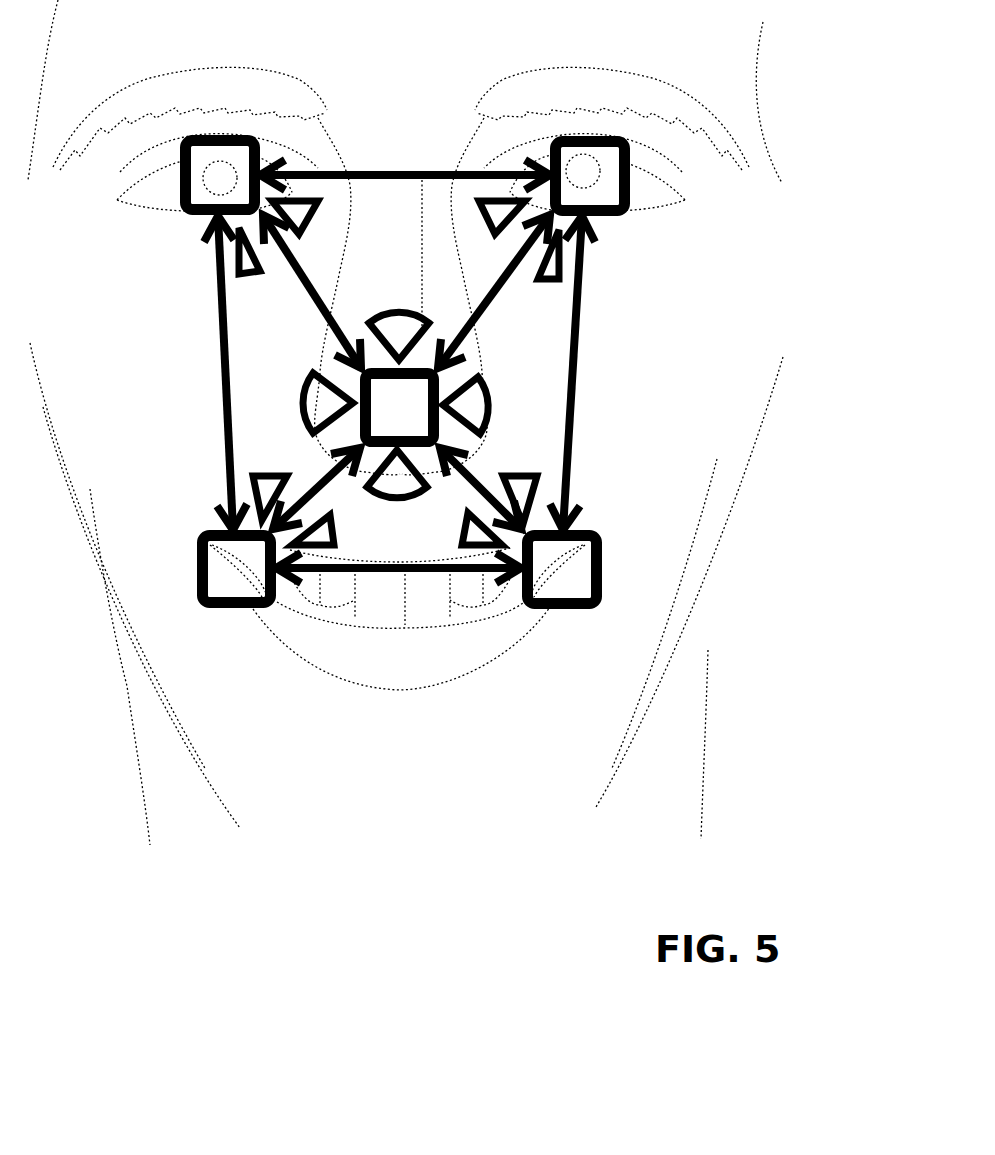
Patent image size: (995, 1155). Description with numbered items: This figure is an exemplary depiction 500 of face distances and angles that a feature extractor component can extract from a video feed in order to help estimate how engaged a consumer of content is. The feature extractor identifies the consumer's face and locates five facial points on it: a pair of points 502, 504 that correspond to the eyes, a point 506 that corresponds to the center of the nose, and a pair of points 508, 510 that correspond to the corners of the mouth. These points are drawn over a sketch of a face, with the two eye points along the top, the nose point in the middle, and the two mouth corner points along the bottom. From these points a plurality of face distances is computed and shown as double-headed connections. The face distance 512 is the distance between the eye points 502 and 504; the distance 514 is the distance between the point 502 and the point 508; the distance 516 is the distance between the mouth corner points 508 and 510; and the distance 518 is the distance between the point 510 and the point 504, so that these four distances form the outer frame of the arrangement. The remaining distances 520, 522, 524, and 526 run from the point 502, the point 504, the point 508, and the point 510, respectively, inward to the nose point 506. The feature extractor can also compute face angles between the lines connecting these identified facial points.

The depiction of face distances and angles 500 is at (790, 110).
The eye point 502 is at (185, 212).
The eye point 504 is at (614, 212).
The nose center point 506 is at (358, 368).
The mouth corner point 508 is at (231, 608).
The mouth corner point 510 is at (564, 608).
The face distance 512 is at (406, 172).
The face distance 514 is at (222, 362).
The face distance 516 is at (395, 564).
The face distance 518 is at (578, 348).
The face distance 520 is at (298, 258).
The face distance 522 is at (492, 292).
The face distance 524 is at (324, 470).
The face distance 526 is at (468, 472).